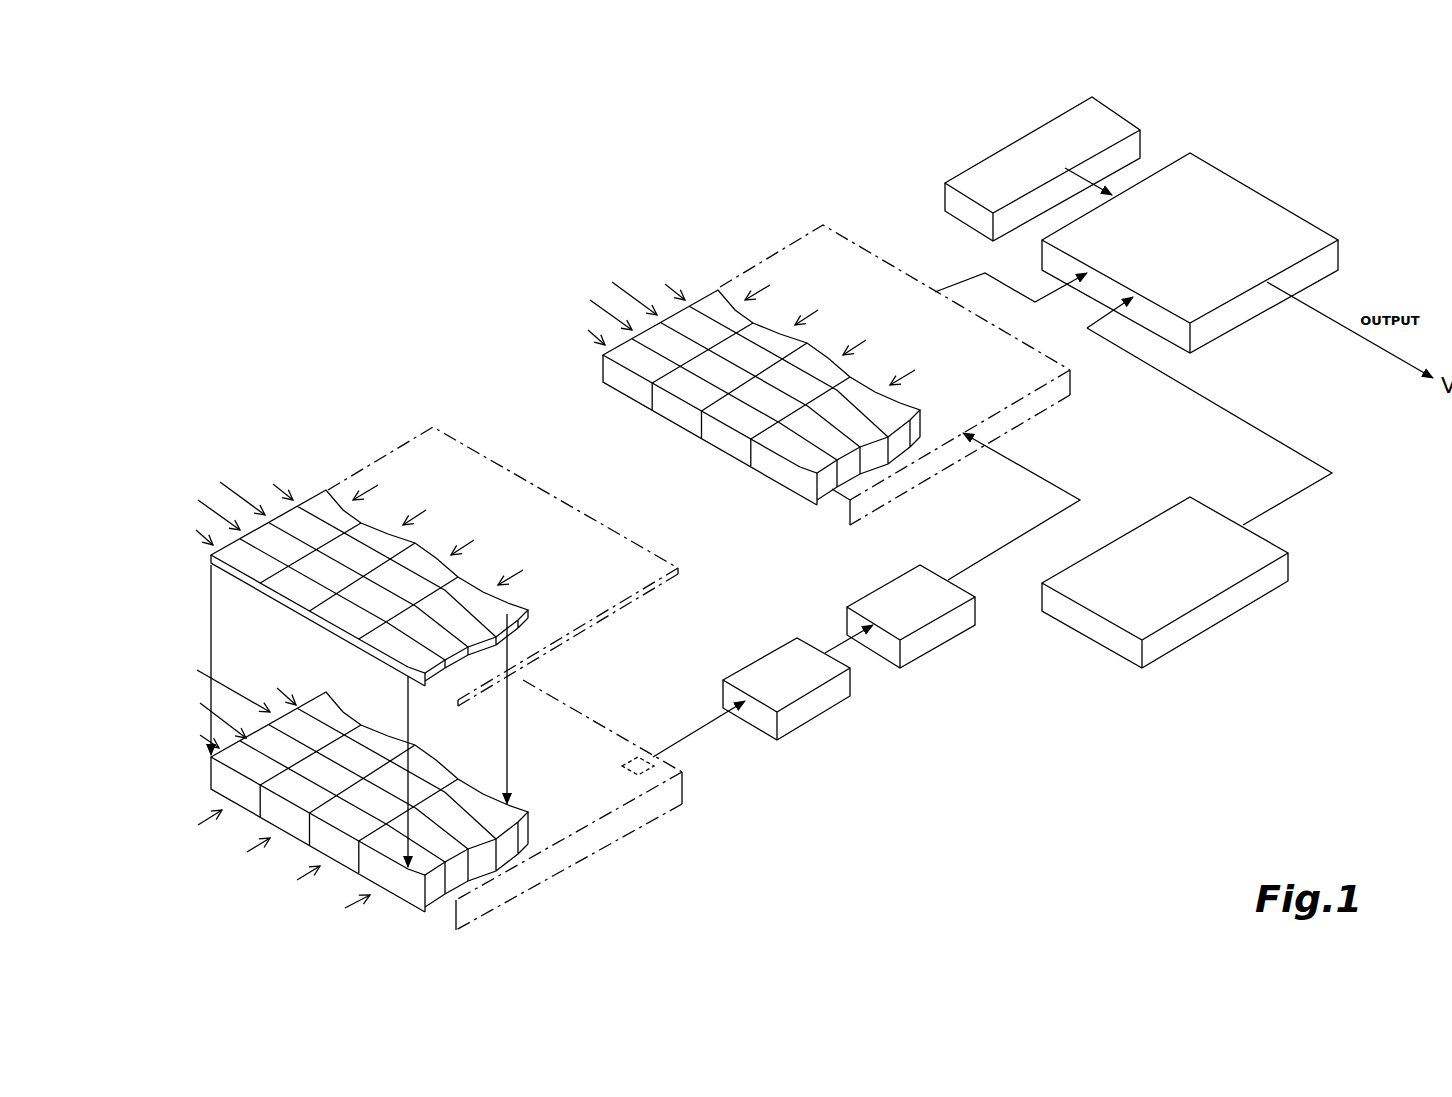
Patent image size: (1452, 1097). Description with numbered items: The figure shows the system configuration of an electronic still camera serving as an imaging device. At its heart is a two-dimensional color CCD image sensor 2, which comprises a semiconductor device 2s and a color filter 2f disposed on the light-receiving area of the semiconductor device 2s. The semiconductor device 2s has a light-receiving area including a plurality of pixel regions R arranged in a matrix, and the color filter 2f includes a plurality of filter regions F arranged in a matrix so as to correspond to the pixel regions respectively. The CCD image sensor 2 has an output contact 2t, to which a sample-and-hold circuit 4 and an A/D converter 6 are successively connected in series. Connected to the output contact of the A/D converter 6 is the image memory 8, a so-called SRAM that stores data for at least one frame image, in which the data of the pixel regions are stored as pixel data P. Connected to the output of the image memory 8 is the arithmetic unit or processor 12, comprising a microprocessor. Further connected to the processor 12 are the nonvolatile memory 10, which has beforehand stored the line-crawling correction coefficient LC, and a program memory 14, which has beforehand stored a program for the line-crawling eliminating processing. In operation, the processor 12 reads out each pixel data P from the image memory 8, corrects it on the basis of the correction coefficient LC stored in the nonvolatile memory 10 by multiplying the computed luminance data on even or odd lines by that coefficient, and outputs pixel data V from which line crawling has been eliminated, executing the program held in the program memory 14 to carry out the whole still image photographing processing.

The CCD image sensor 2 is at (312, 410).
The color filter 2f is at (433, 425).
The semiconductor device 2s is at (545, 878).
The output contact 2t is at (655, 774).
The sample-and-hold circuit 4 is at (818, 717).
The A/D converter 6 is at (932, 655).
The image memory 8 is at (815, 225).
The nonvolatile memory 10 is at (1178, 648).
The processor 12 is at (1268, 196).
The program memory 14 is at (968, 168).